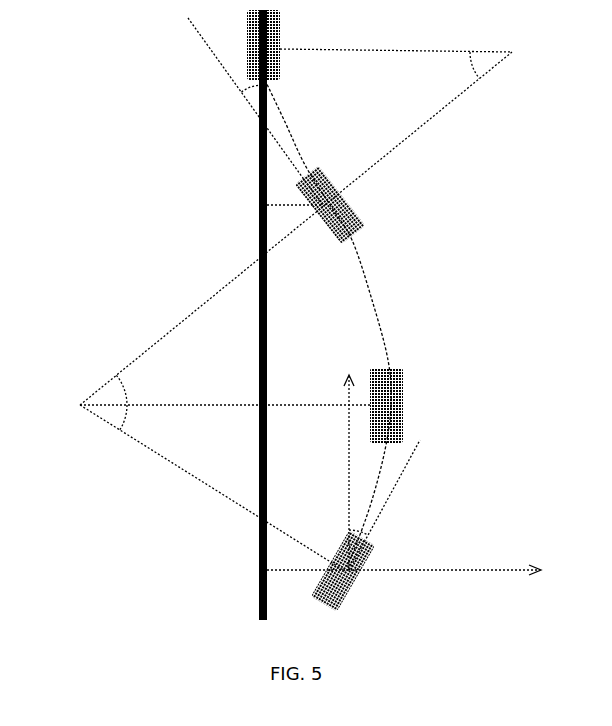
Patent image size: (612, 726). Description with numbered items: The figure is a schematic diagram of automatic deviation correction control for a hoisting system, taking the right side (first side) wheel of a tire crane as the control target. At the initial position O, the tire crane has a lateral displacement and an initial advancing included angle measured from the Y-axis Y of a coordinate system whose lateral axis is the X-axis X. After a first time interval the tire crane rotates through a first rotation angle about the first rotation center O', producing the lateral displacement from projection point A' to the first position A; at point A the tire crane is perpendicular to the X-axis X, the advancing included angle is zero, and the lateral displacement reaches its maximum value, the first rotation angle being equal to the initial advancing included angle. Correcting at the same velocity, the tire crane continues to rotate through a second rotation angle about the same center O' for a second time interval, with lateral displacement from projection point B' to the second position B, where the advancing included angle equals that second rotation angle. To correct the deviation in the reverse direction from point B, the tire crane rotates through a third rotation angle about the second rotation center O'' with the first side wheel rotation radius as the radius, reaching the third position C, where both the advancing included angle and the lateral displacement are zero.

The initial position of the tire crane O is at (343, 571).
The first rotation center O' is at (203, 483).
The second rotation center O'' is at (322, 215).
The first position of point A is at (397, 405).
The projection point A' is at (232, 385).
The second position of point B is at (330, 205).
The projection point B' is at (272, 208).
The third position of point C is at (379, 45).
The X-axis X is at (411, 571).
The Y-axis Y is at (357, 464).